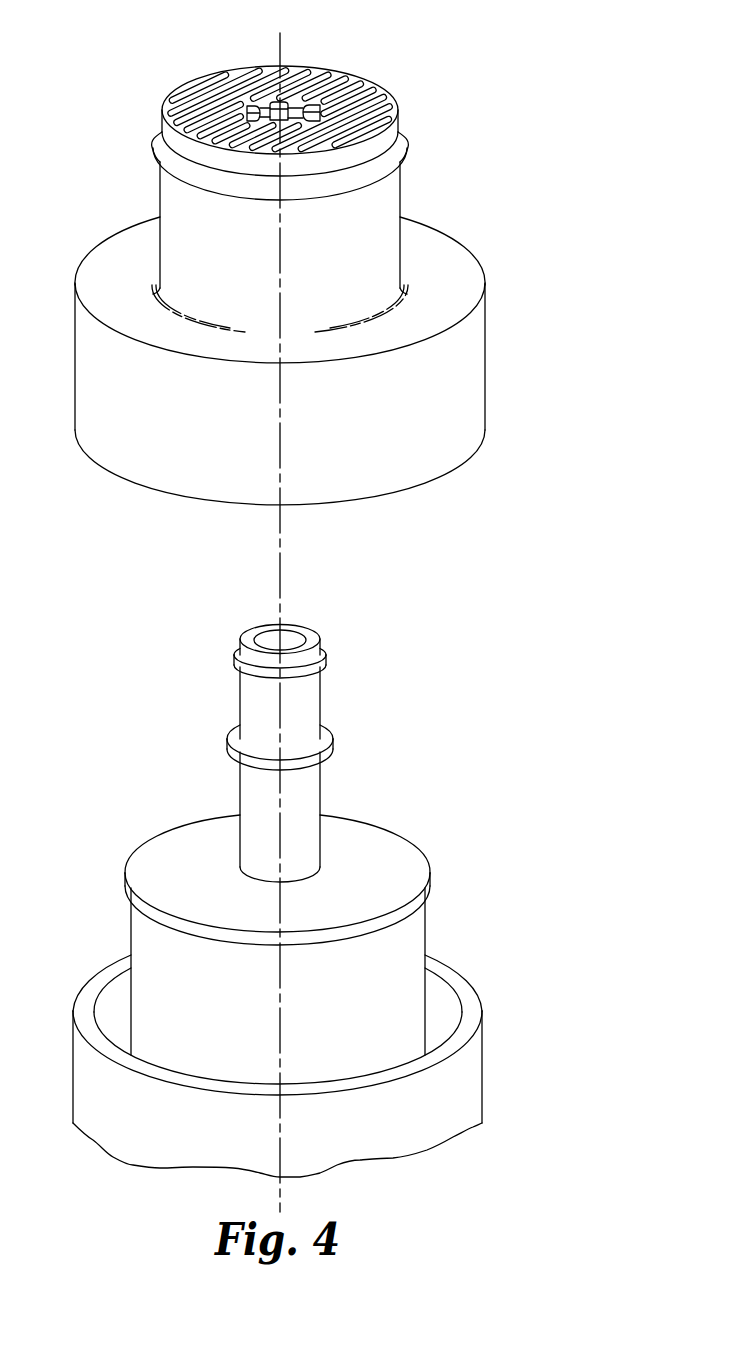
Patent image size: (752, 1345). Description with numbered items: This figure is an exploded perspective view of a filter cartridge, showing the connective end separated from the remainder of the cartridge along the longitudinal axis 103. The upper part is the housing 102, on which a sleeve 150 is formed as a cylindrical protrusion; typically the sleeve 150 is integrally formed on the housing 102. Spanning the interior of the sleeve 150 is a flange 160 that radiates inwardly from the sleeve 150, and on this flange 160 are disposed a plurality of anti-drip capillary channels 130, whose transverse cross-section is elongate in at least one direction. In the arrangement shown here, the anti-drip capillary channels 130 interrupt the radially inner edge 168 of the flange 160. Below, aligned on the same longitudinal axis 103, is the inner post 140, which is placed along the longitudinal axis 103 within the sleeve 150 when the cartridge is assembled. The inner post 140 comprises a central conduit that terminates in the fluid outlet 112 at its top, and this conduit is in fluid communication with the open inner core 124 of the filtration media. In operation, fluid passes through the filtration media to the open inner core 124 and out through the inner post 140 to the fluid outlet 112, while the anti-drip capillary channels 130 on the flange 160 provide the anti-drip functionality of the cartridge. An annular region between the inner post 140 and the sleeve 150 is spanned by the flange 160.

The housing 102 is at (475, 372).
The longitudinal axis 103 is at (282, 542).
The fluid outlet 112 is at (267, 636).
The open inner core 124 is at (140, 940).
The anti-drip capillary channels 130 is at (208, 90).
The inner post 140 is at (304, 734).
The sleeve 150 is at (390, 192).
The flange 160 is at (345, 107).
The radially inner edge 168 is at (273, 108).